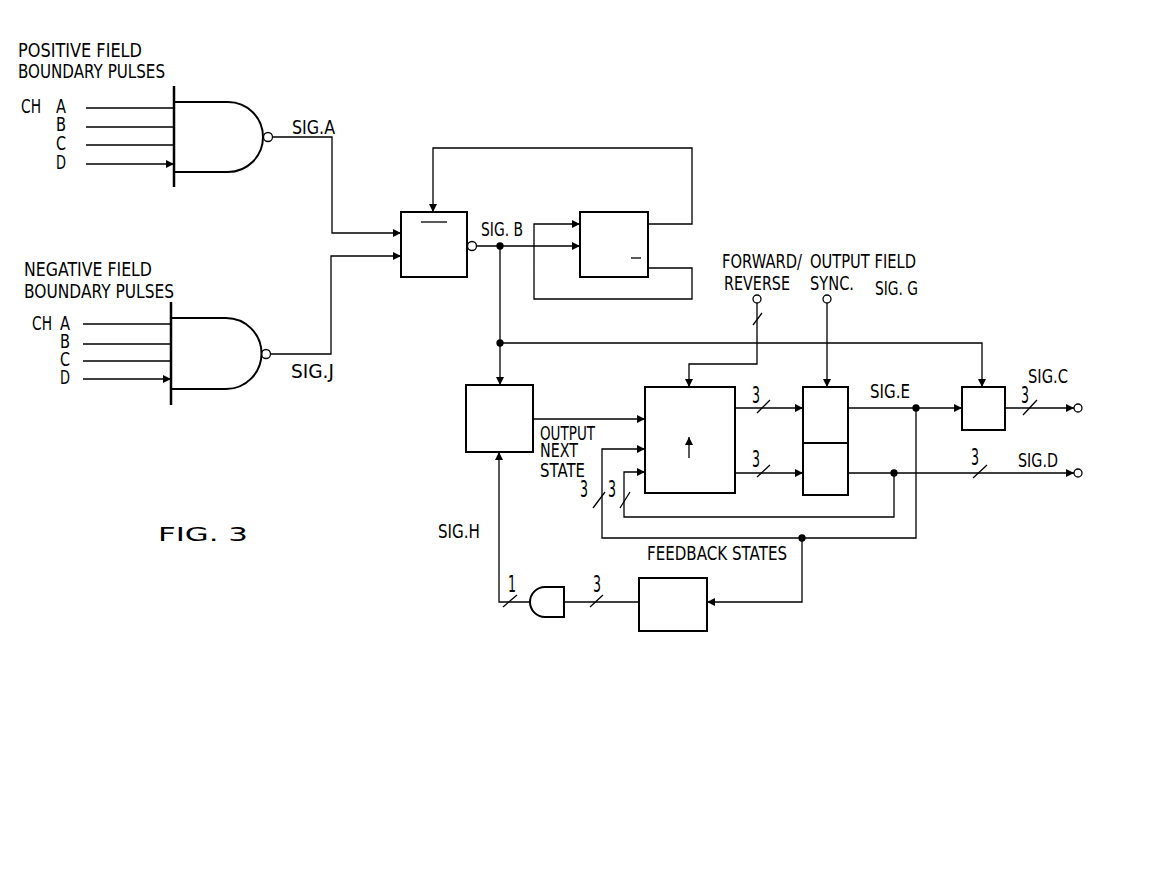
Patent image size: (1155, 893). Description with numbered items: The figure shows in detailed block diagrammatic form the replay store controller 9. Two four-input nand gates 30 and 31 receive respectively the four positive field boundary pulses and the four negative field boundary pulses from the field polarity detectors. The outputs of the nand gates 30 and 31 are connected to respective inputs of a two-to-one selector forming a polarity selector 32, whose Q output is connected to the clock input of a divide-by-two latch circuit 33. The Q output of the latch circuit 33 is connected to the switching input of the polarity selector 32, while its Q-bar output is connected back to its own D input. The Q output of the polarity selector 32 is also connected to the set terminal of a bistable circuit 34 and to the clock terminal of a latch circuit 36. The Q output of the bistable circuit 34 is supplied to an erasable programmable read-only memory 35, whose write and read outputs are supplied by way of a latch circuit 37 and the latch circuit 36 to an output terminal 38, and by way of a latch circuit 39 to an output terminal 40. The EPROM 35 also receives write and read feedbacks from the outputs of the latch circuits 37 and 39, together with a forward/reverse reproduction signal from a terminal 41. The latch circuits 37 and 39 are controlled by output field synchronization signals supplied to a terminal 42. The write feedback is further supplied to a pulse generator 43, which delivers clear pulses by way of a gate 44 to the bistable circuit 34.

The store controller 9 is at (758, 239).
The four-input nand gate 30 is at (232, 172).
The four-input nand gate 31 is at (223, 390).
The polarity selector 32 is at (455, 278).
The divide-by-two latch circuit 33 is at (648, 248).
The bistable circuit 34 is at (466, 448).
The erasable programmable read-only memory 35 is at (645, 395).
The latch circuit 36 is at (975, 387).
The latch circuit 37 is at (848, 388).
The output terminal 38 is at (1083, 404).
The latch circuit 39 is at (803, 487).
The output terminal 40 is at (1080, 480).
The terminal 41 is at (750, 300).
The terminal 42 is at (831, 302).
The pulse generator 43 is at (697, 625).
The gate 44 is at (548, 617).